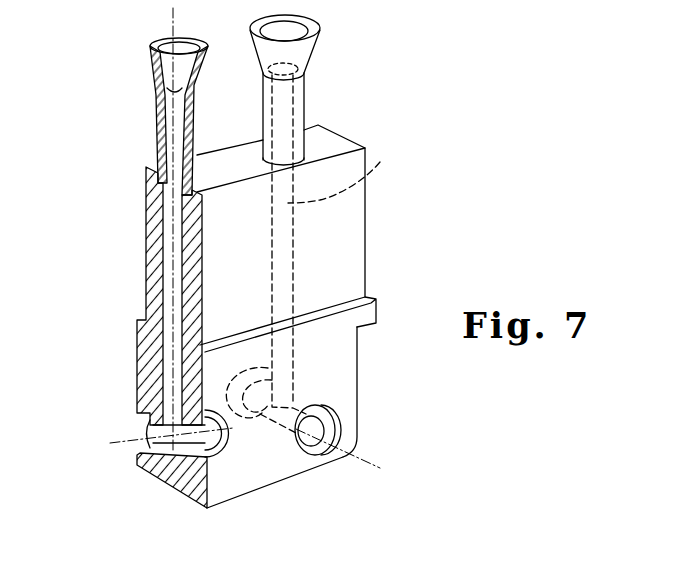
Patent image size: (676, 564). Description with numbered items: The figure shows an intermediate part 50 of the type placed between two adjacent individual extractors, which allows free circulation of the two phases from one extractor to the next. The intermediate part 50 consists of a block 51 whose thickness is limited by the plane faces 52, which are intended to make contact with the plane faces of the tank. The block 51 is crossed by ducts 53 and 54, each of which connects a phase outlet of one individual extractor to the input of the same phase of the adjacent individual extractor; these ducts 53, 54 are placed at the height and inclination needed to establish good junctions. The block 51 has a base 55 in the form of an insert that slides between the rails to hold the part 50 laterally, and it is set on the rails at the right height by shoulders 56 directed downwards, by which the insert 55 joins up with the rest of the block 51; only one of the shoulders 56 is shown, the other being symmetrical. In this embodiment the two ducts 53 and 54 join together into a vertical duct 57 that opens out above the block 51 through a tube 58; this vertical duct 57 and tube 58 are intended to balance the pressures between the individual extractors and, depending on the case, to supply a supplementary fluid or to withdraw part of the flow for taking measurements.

The intermediate part 50 is at (360, 118).
The block 51 is at (340, 257).
The plane faces 52 is at (146, 236).
The duct 53 is at (130, 430).
The duct 54 is at (330, 455).
The base 55 is at (343, 417).
The shoulders 56 is at (367, 327).
The vertical duct 57 is at (168, 289).
The tube 58 is at (158, 132).